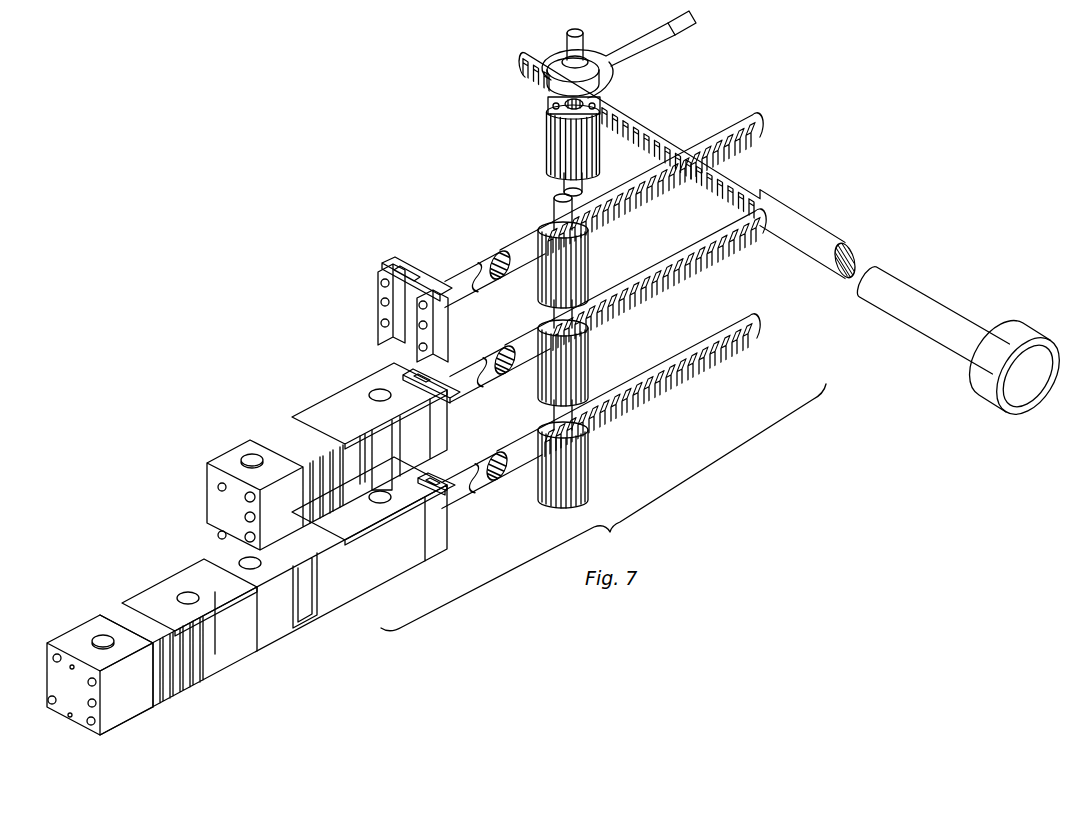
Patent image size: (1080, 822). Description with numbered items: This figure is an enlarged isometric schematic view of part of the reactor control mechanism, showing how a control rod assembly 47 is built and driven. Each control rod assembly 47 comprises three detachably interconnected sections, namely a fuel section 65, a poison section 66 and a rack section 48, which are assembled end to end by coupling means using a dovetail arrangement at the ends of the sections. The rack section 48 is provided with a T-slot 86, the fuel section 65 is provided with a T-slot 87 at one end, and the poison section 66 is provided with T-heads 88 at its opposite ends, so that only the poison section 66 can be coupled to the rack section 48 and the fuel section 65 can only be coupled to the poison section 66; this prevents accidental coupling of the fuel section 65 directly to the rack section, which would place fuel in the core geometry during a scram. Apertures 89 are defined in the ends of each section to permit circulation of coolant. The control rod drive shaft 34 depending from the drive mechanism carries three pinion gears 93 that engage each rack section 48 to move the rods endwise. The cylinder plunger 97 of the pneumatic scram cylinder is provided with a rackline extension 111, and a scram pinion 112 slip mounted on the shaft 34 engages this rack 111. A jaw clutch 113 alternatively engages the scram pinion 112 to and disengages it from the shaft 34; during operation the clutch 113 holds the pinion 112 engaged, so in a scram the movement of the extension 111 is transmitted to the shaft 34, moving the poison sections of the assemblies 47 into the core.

The control rod drive shaft 34 is at (568, 40).
The control rod assembly 47 is at (726, 128).
The rack section 48 is at (506, 244).
The fuel section 65 is at (128, 590).
The poison section 66 is at (325, 406).
The T-slot 86 is at (410, 266).
The T-slot 87 is at (232, 606).
The T-heads 88 is at (403, 363).
The apertures 89 is at (380, 320).
The pinion gears 93 is at (588, 262).
The cylinder plunger 97 is at (977, 390).
The rackline extension 111 is at (733, 186).
The scram pinion 112 is at (550, 144).
The jaw clutch 113 is at (552, 100).